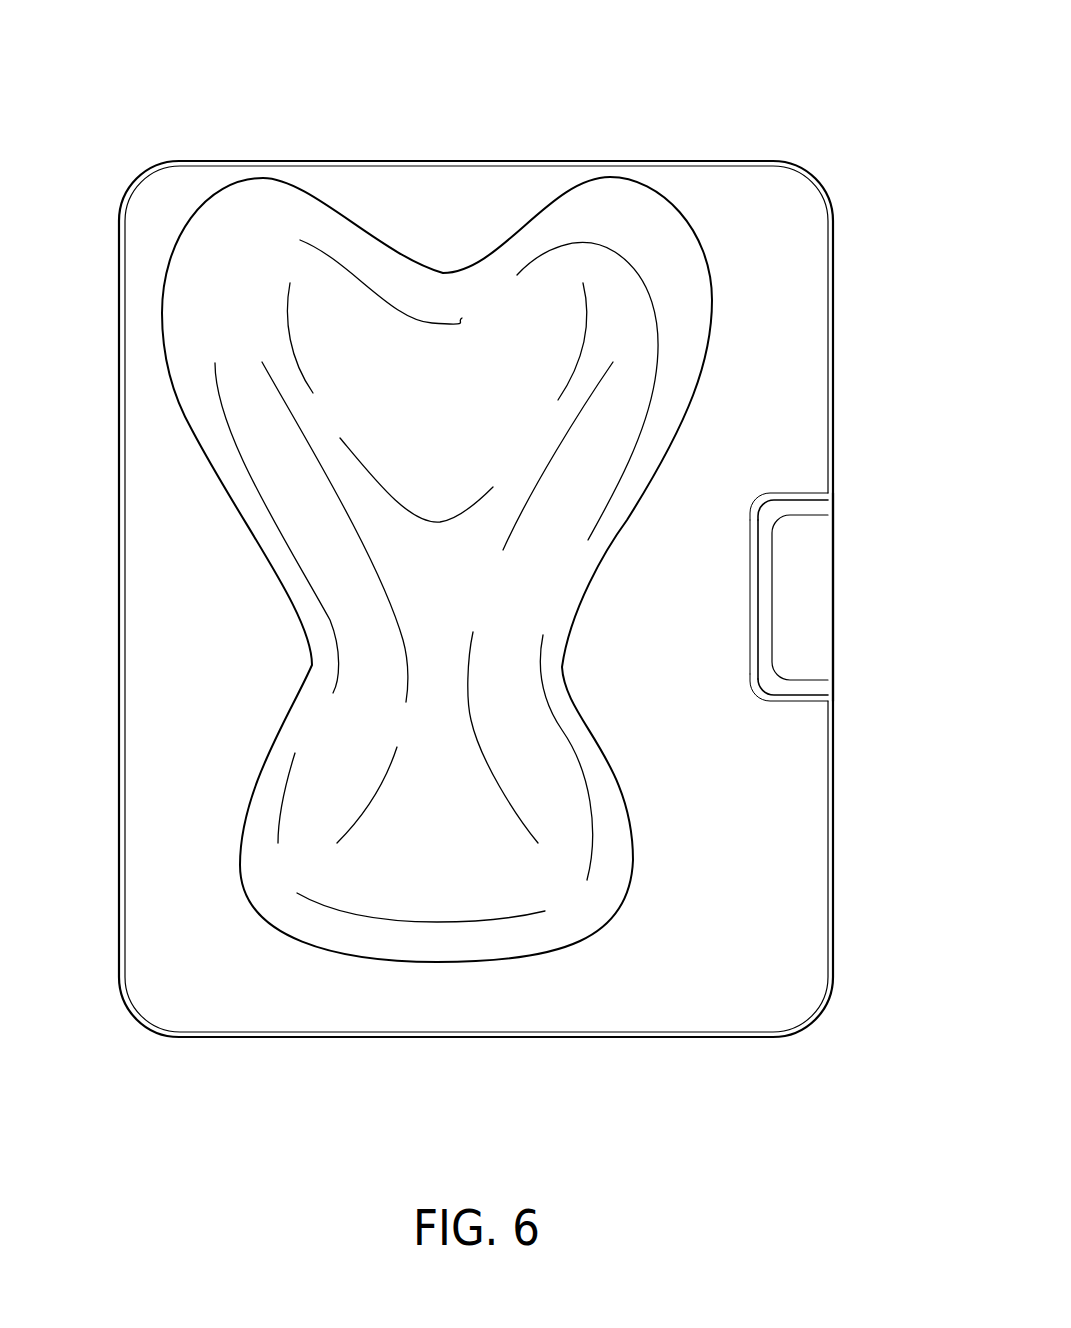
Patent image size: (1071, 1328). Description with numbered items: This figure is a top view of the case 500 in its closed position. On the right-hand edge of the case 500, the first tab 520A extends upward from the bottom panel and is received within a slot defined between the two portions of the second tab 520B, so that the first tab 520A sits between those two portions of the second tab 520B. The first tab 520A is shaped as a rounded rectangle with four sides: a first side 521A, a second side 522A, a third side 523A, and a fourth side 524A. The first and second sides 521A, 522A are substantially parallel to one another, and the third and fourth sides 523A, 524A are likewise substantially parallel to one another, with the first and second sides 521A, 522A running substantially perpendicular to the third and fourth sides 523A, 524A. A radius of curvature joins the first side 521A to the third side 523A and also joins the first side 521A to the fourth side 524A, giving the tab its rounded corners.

The case 500 is at (67, 105).
The first tab 520A is at (807, 613).
The second tab 520B is at (835, 360).
The first side 521A is at (757, 612).
The second side 522A is at (833, 558).
The third side 523A is at (800, 697).
The fourth side 524A is at (810, 497).